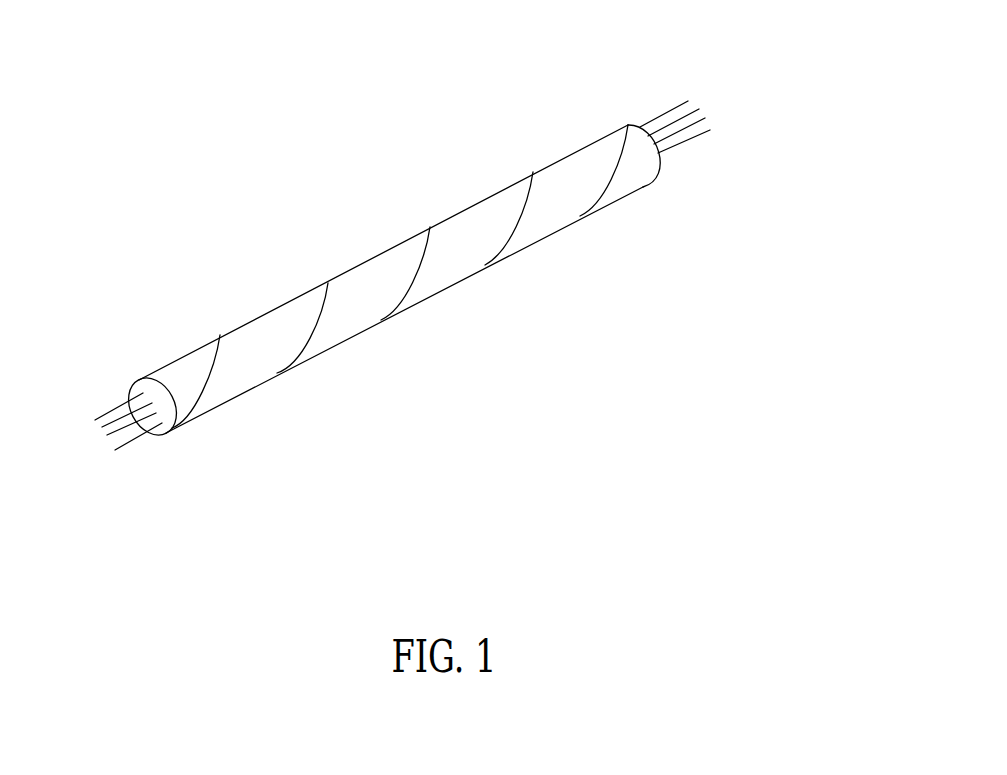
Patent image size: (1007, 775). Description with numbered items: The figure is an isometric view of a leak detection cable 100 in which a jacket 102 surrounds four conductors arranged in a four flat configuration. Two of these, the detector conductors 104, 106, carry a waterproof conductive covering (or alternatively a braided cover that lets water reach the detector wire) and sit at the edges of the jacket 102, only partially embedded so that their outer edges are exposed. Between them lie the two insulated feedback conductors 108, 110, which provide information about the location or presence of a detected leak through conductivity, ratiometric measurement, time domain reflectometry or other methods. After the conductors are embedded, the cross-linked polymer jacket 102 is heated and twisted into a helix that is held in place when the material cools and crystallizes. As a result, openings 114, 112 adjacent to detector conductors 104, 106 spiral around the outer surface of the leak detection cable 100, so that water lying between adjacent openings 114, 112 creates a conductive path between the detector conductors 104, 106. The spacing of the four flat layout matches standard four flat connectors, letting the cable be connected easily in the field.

The leak detection cable 100 is at (478, 308).
The jacket 102 is at (478, 199).
The detector conductor 104 is at (150, 455).
The detector conductor 106 is at (680, 144).
The feedback conductor 108 is at (692, 111).
The feedback conductor 110 is at (707, 121).
The opening 112 is at (318, 303).
The opening 114 is at (416, 261).